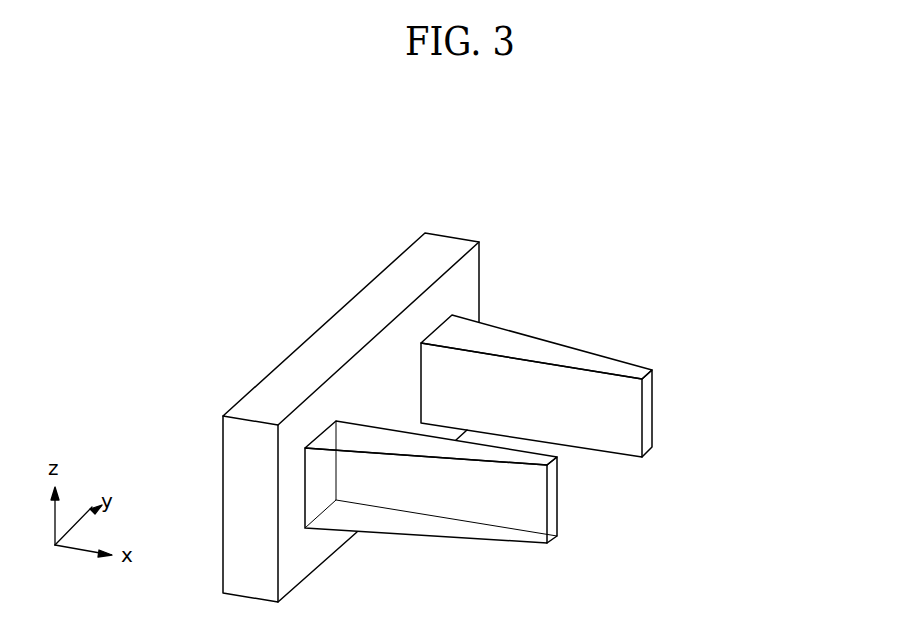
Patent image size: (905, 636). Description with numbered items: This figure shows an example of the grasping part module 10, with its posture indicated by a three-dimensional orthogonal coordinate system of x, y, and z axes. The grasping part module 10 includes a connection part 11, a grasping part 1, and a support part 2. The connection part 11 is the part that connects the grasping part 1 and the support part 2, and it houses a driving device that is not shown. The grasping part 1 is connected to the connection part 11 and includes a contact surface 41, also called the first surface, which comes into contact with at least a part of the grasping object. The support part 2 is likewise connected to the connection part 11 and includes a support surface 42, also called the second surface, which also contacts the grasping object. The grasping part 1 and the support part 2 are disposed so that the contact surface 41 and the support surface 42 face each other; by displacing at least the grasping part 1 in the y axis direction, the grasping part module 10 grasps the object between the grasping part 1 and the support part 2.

The grasping part module 10 is at (717, 318).
The connection part 11 is at (345, 302).
The grasping part 1 is at (488, 543).
The support part 2 is at (655, 415).
The contact surface 41 is at (530, 495).
The support surface 42 is at (526, 395).